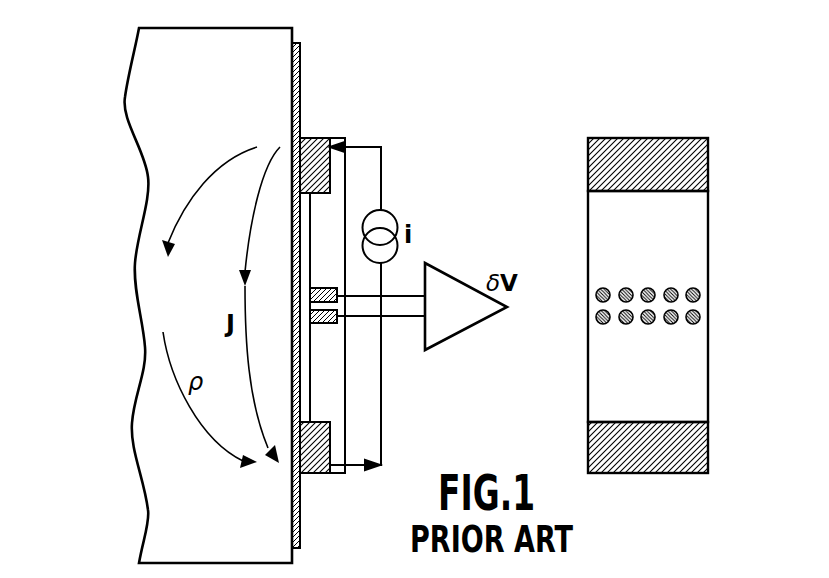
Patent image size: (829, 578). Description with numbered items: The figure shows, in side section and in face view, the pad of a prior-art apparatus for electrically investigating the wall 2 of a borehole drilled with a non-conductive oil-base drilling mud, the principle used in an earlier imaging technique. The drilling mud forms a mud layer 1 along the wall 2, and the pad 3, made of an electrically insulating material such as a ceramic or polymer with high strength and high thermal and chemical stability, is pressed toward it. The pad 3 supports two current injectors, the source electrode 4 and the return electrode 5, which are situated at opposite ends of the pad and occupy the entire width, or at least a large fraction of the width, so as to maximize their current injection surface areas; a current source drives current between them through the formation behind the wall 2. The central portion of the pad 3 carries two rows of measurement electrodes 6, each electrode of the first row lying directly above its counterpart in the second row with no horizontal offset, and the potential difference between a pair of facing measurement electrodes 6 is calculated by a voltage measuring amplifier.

The mud layer 1 is at (300, 70).
The wall 2 is at (148, 79).
The pad 3 is at (333, 382).
The source electrode 4 is at (313, 143).
The return electrode 5 is at (313, 463).
The measurement electrodes 6 is at (330, 289).